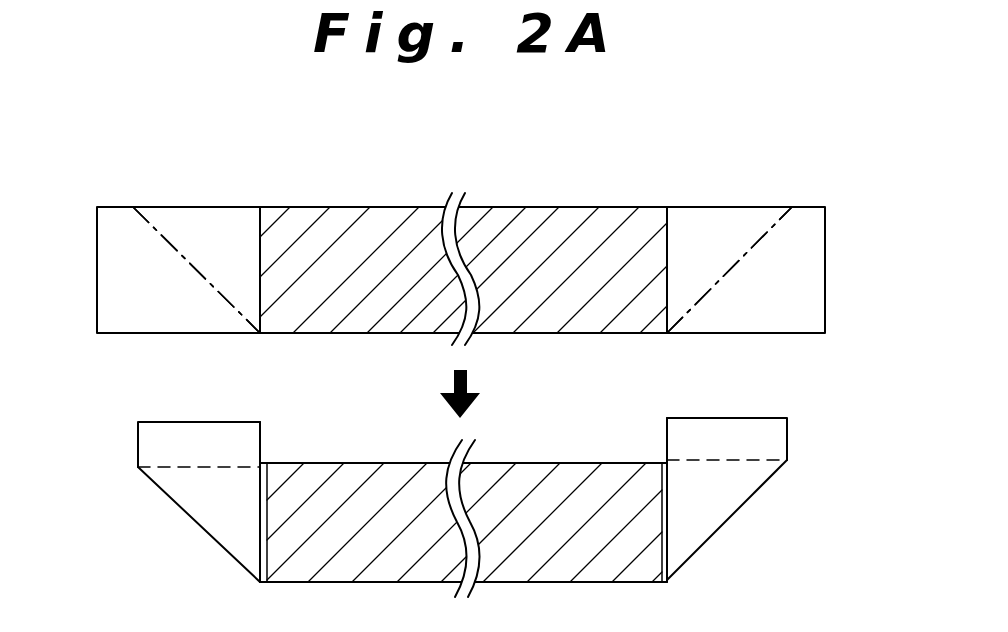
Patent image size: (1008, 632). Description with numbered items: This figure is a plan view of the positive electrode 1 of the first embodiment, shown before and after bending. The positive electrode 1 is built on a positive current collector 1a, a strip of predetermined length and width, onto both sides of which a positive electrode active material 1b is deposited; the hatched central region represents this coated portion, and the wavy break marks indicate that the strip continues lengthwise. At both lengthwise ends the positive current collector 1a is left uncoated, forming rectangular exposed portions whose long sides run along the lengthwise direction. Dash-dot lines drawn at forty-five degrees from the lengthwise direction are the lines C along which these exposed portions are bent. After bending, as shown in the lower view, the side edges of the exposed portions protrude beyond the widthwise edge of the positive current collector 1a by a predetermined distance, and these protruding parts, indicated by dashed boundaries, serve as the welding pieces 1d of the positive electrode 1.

The positive electrode 1 is at (463, 511).
The positive current collector 1a is at (353, 208).
The positive electrode active material 1b is at (570, 243).
The welding pieces 1d is at (167, 442).
The 45° lines C is at (190, 267).